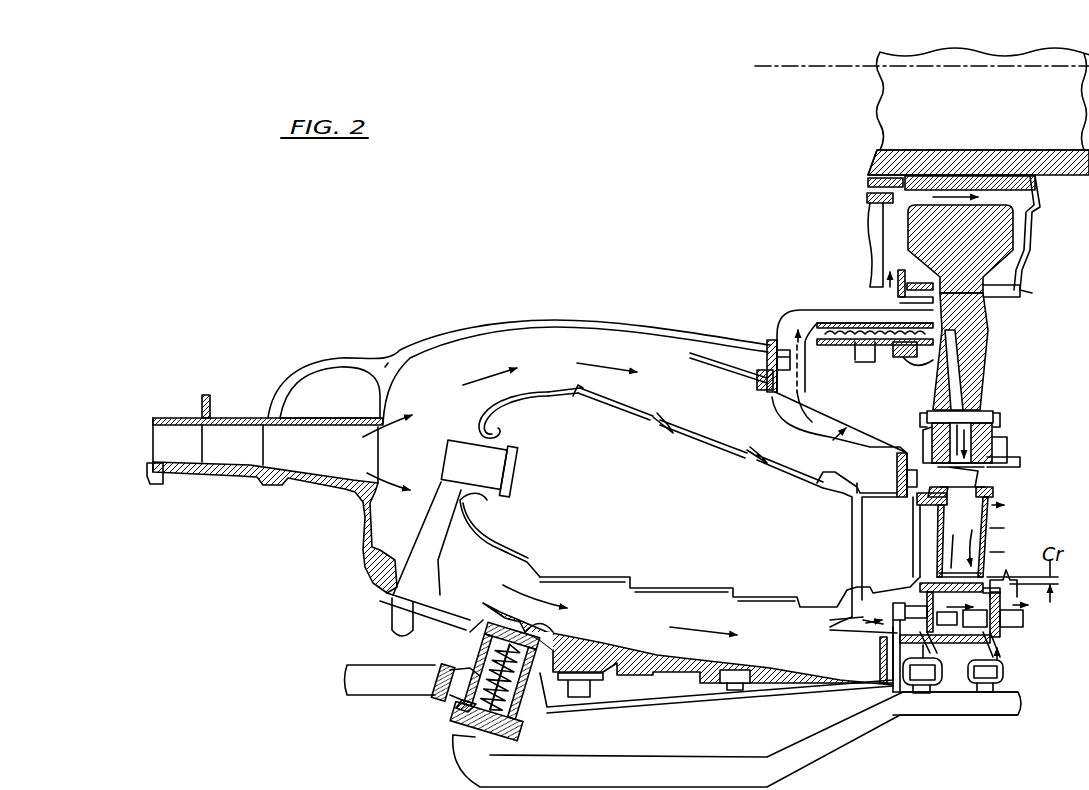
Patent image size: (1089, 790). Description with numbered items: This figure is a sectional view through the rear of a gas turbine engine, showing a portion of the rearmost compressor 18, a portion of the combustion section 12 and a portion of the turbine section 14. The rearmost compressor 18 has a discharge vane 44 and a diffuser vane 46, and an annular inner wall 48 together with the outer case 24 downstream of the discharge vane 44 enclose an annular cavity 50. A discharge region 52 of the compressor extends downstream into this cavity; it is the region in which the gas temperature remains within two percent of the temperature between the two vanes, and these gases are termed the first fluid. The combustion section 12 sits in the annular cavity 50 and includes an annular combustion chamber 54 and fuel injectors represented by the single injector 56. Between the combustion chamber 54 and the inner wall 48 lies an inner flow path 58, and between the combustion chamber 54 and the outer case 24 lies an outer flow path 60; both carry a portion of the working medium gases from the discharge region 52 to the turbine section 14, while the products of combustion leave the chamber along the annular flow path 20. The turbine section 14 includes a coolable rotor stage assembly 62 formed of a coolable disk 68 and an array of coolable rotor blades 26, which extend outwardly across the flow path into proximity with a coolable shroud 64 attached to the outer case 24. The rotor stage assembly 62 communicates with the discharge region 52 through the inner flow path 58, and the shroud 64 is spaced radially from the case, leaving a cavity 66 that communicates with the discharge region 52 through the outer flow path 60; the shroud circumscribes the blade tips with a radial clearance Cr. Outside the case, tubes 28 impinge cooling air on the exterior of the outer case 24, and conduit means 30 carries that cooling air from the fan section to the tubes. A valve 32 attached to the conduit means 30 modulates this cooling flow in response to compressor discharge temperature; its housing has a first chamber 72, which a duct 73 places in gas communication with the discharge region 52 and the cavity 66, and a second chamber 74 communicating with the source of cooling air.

The combustion section 12 is at (549, 388).
The turbine section 14 is at (1000, 350).
The rearmost compressor 18 is at (150, 447).
The annular flow path 20 is at (1030, 536).
The outer case 24 is at (655, 667).
The rotor blade 26 is at (993, 505).
The tubes 28 is at (935, 675).
The conduit means 30 is at (373, 667).
The valve 32 is at (450, 717).
The discharge vane 44 is at (192, 455).
The diffuser vane 46 is at (322, 455).
The annular inner wall 48 is at (476, 338).
The annular cavity 50 is at (470, 433).
The discharge region 52 is at (414, 458).
The annular combustion chamber 54 is at (708, 436).
The fuel injector 56 is at (495, 473).
The inner flow path 58 is at (675, 393).
The outer flow path 60 is at (643, 628).
The coolable rotor stage assembly 62 is at (985, 329).
The coolable shroud 64 is at (987, 580).
The cavity 66 is at (953, 668).
The coolable disk 68 is at (915, 276).
The first chamber 72 is at (492, 655).
The duct 73 is at (470, 632).
The second chamber 74 is at (491, 677).